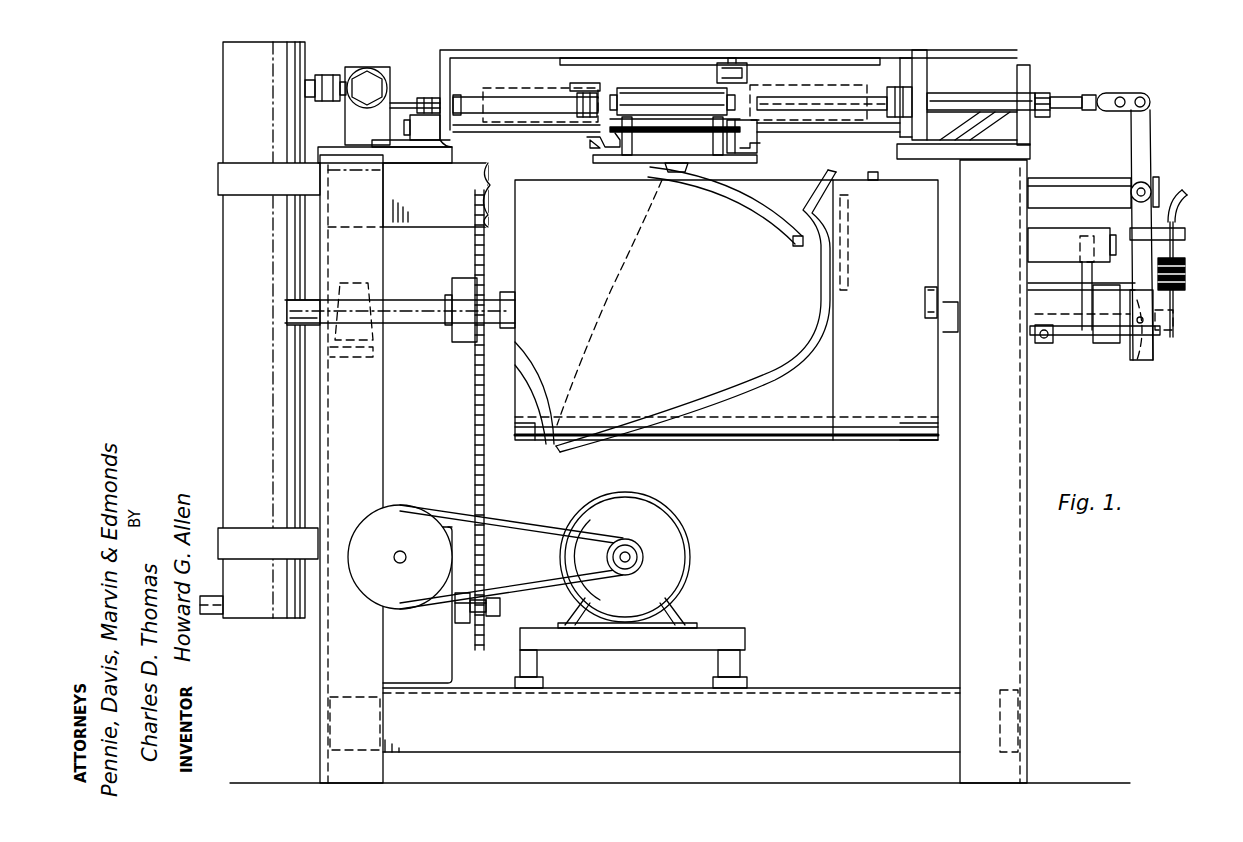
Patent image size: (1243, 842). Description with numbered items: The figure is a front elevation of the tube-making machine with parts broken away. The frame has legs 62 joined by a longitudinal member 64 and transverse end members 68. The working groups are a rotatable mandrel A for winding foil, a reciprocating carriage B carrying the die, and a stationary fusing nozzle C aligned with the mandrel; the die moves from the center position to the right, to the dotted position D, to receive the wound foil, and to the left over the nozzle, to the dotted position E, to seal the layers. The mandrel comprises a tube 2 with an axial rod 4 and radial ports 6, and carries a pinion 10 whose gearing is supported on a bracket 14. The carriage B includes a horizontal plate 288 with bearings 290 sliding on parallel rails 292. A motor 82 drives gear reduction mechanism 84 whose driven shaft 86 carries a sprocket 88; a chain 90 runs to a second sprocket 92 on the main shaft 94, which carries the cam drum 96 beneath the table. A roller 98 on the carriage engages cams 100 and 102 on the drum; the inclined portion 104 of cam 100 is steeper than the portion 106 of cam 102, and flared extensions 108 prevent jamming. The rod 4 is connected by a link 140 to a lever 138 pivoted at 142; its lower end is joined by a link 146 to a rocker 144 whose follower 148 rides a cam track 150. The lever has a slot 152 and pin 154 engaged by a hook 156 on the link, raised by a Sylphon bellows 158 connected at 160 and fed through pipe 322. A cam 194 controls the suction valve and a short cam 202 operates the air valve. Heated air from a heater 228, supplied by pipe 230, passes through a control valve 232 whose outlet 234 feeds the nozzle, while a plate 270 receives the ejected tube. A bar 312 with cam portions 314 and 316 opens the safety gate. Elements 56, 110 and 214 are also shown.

The tube 2 is at (786, 100).
The axial rod 4 is at (1087, 97).
The radial ports 6 is at (758, 103).
The pinion 10 is at (1047, 93).
The plate or bracket 14 is at (993, 86).
The cylinder 56 is at (665, 90).
The legs 62 is at (378, 726).
The longitudinal member 64 is at (413, 224).
The transverse end members 68 is at (452, 156).
The motor 82 is at (680, 537).
The gear reduction mechanism 84 is at (400, 594).
The driven shaft 86 is at (490, 608).
The sprocket 88 is at (455, 628).
The chain 90 is at (485, 490).
The second sprocket 92 is at (465, 358).
The main shaft 94 is at (405, 320).
The cam drum 96 is at (722, 445).
The roller 98 is at (735, 160).
The cam 100 is at (755, 214).
The cam 102 is at (842, 250).
The inclined portion 104 is at (615, 272).
The inclined portion 106 is at (722, 396).
The flared ends or extensions 108 is at (826, 170).
The cylinder 110 is at (1082, 270).
The lever 138 is at (1152, 136).
The link 140 is at (1133, 95).
The pivot 142 is at (1131, 192).
The rocker 144 is at (942, 368).
The link 146 is at (1100, 347).
The follower 148 is at (927, 335).
The cam track 150 is at (930, 412).
The slot 152 is at (1138, 370).
The pin 154 is at (1143, 320).
The hook 156 is at (1158, 347).
The Sylphon bellows 158 is at (1182, 266).
The connection 160 is at (1175, 313).
The cam 194 is at (848, 212).
The short cam 202 is at (878, 180).
The plate 214 is at (595, 95).
The heater 228 is at (235, 260).
The pipe 230 is at (210, 618).
The control valve 232 is at (395, 44).
The outlet 234 is at (400, 105).
The plate 270 is at (640, 127).
The horizontal plate 288 is at (605, 160).
The bearings 290 is at (605, 135).
The rails 292 is at (925, 95).
The bar 312 is at (676, 36).
The cam portion 314 is at (870, 56).
The cam portion 316 is at (595, 60).
The pipe 322 is at (1178, 208).
The mandrel A is at (840, 95).
The reciprocating carriage B is at (592, 196).
The fusing nozzle C is at (515, 100).
The dotted line position D is at (822, 85).
The dotted line position E is at (487, 90).